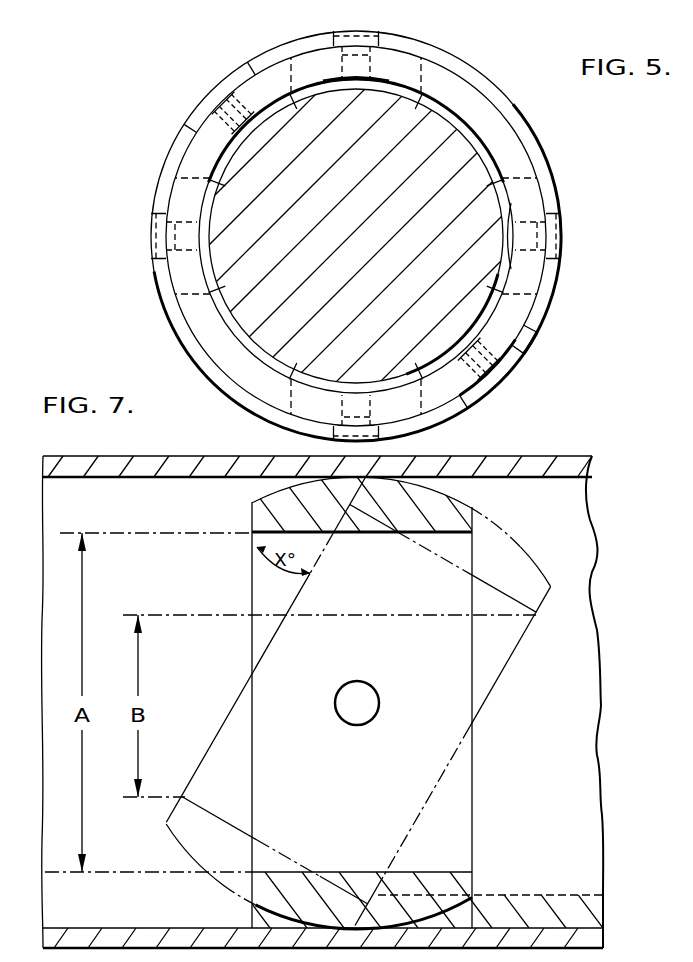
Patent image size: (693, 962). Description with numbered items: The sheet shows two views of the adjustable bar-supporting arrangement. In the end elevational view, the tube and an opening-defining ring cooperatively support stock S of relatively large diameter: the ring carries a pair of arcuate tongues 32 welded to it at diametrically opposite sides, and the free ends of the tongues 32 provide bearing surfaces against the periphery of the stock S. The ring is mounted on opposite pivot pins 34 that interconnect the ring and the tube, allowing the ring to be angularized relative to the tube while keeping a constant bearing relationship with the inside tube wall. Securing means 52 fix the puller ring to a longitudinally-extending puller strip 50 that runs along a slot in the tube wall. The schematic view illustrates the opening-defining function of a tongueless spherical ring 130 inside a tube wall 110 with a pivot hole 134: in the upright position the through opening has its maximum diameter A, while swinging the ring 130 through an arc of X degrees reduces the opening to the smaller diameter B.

In FIG. 5, the arcuate tongue 32 is at (460, 150).
In FIG. 5, the pivot pin 34 is at (374, 235).
In FIG. 5, the puller strip 50 is at (516, 363).
In FIG. 5, the securing means 52 is at (365, 265).
In FIG. 5, the stock S is at (346, 236).
In FIG. 7, the housing wall 110 is at (103, 462).
In FIG. 7, the tongueless spherical ring 130 is at (267, 509).
In FIG. 7, the pivot hole 134 is at (380, 703).